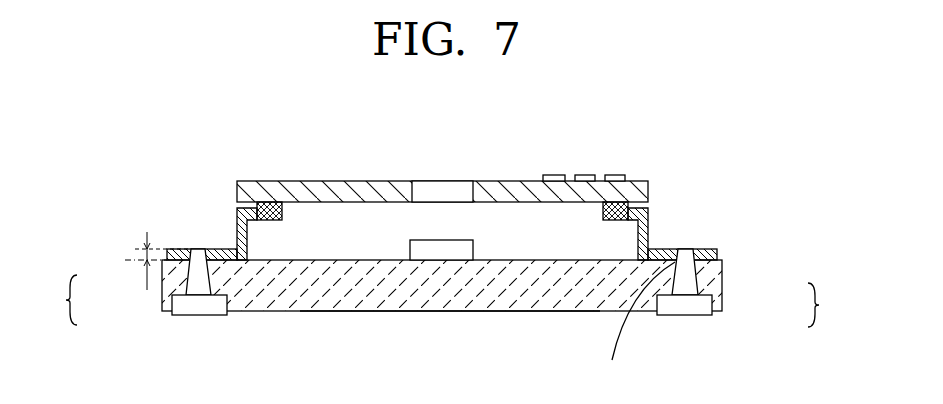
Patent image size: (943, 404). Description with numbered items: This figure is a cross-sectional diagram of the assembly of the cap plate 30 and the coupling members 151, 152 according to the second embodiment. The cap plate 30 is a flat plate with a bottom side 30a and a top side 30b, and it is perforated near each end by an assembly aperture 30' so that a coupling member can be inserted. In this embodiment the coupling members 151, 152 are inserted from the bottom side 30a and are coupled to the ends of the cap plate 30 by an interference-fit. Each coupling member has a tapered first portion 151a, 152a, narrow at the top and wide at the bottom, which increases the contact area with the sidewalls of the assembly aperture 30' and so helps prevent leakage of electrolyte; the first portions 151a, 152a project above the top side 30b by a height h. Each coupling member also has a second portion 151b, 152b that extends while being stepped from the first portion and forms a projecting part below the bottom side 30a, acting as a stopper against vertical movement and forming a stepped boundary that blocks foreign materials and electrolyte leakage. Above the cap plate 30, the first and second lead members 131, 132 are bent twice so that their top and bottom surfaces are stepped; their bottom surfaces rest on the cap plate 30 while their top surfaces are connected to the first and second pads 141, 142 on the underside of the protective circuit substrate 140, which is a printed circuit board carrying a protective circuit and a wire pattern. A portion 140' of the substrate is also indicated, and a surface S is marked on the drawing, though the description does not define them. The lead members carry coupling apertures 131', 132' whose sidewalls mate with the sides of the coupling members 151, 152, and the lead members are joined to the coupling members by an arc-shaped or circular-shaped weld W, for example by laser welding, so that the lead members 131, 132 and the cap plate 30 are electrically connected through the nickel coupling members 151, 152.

The cap plate 30 is at (442, 321).
The bottom side of the cap plate 30a is at (518, 312).
The top side of the cap plate 30b is at (520, 260).
The assembly aperture 30' is at (441, 339).
The second lead member 132 is at (283, 160).
The coupling aperture 132' is at (206, 217).
The first lead member 131 is at (601, 160).
The coupling aperture 131' is at (677, 218).
The second pad 142 is at (263, 203).
The first pad 141 is at (623, 203).
The protective circuit substrate 140 is at (442, 151).
The chip region 140' is at (442, 151).
The coupling member 151 is at (831, 305).
The first portion 151a is at (695, 288).
The second portion 151b is at (700, 305).
The coupling member 152 is at (52, 300).
The first portion 152a is at (192, 279).
The second portion 152b is at (172, 305).
The weld W is at (208, 293).
The side surface S is at (640, 323).
The height h is at (156, 261).